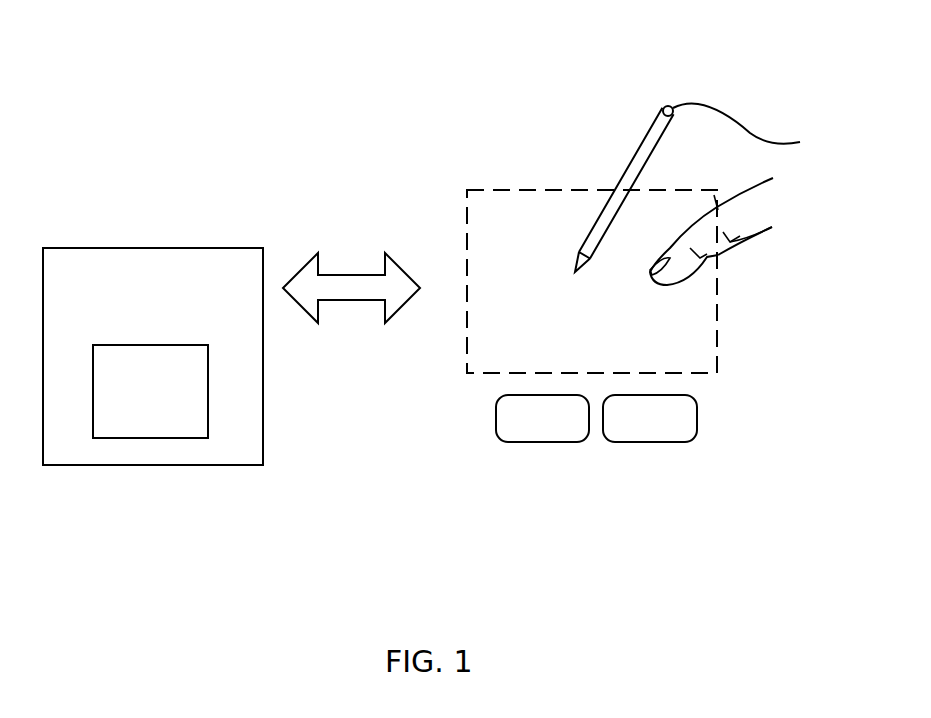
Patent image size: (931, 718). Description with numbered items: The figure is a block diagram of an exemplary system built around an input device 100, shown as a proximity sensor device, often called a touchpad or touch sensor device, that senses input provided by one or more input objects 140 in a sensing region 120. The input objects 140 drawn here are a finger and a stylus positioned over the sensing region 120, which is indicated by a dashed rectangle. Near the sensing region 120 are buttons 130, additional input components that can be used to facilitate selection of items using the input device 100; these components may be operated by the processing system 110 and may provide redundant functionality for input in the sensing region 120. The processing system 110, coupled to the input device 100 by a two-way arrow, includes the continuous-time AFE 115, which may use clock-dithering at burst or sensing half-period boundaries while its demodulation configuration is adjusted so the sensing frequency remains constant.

The input device 100 is at (375, 99).
The processing system 110 is at (238, 246).
The continuous-time AFE 115 is at (150, 391).
The sensing region 120 is at (719, 302).
The buttons 130 is at (537, 442).
The input objects 140 is at (775, 200).